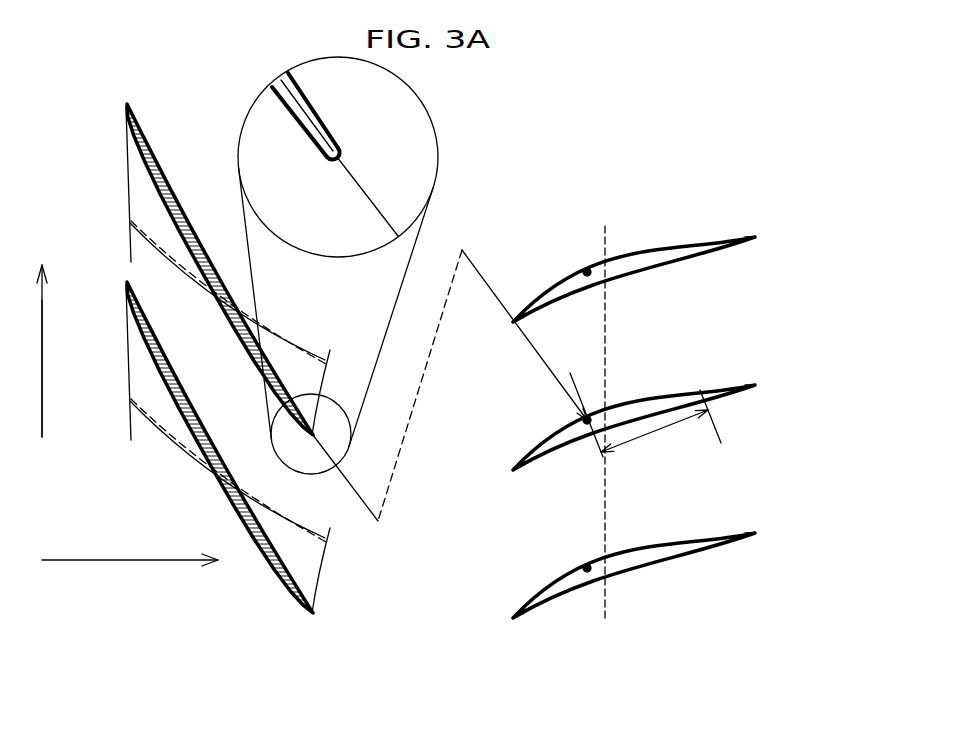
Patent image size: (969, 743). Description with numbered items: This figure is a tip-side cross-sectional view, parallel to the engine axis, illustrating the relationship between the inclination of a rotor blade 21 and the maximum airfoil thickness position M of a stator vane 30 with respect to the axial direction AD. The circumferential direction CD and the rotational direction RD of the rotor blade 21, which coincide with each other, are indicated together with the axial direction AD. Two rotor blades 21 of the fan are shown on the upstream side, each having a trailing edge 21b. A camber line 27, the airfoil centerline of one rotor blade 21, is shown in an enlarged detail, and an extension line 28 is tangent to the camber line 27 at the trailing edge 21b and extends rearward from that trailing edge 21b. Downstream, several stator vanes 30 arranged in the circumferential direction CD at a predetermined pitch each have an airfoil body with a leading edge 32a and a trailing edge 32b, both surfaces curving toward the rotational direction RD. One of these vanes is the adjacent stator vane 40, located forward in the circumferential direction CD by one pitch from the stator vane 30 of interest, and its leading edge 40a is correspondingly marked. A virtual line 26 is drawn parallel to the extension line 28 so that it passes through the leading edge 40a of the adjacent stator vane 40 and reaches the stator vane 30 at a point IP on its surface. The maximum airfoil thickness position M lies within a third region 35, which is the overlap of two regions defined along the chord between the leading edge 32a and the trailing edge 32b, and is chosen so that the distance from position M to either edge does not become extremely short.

The rotor blade 21 is at (130, 192).
The trailing edge of rotor blade 21b is at (341, 157).
The virtual line 26 is at (462, 250).
The camber line 27 is at (316, 116).
The extension line 28 is at (383, 217).
The stator vane 30 is at (674, 388).
The adjacent stator vane 40 is at (707, 223).
The leading edge 32a is at (485, 502).
The leading edge of adjacent stator vane 40a is at (513, 322).
The trailing edge 32b is at (757, 238).
The third region 35 is at (663, 434).
The impingement point IP is at (589, 270).
The maximum airfoil thickness position M is at (607, 262).
The circumferential direction CD is at (44, 372).
The rotational direction RD is at (44, 402).
The axial direction AD is at (130, 548).